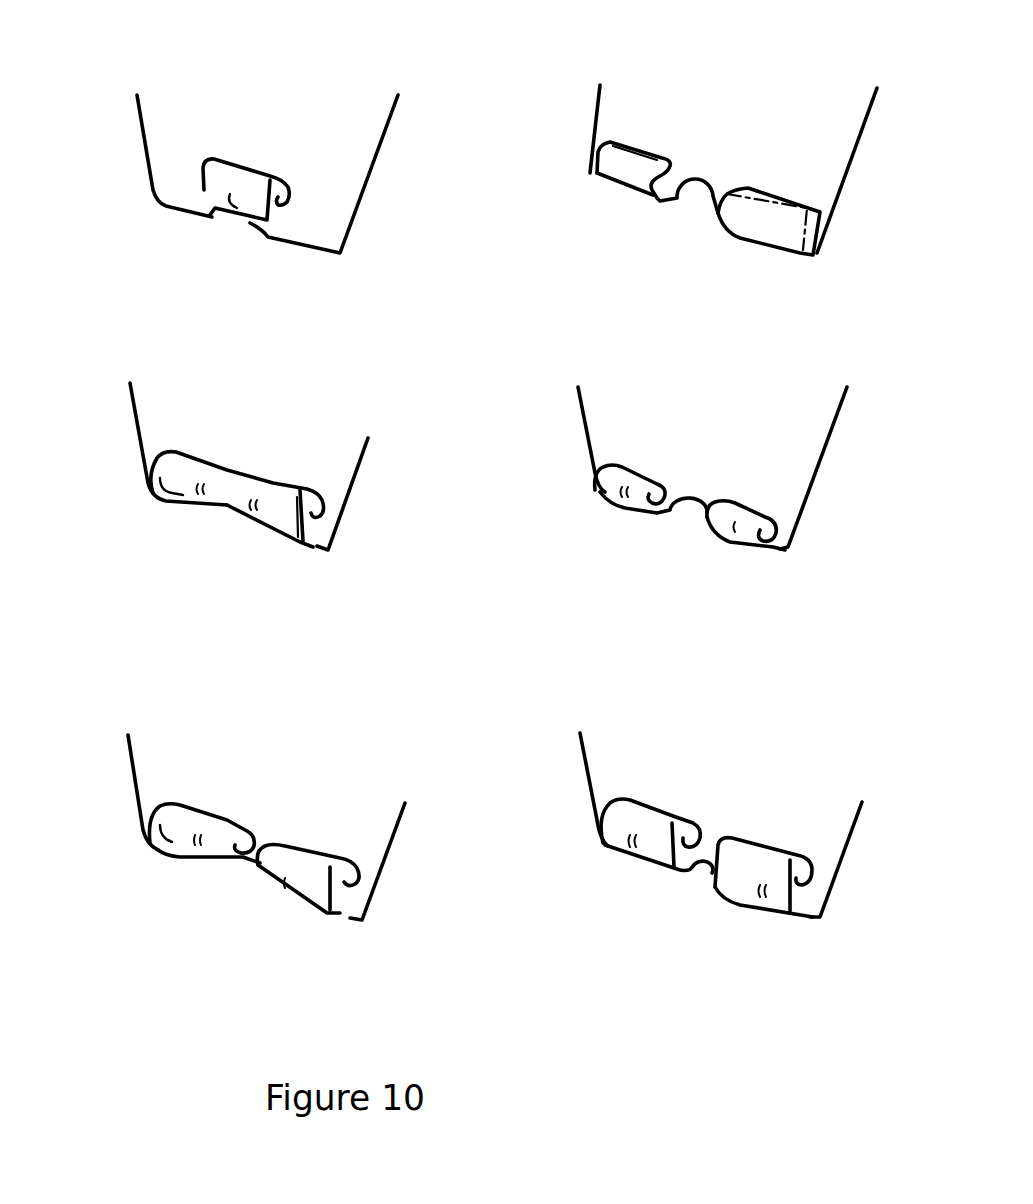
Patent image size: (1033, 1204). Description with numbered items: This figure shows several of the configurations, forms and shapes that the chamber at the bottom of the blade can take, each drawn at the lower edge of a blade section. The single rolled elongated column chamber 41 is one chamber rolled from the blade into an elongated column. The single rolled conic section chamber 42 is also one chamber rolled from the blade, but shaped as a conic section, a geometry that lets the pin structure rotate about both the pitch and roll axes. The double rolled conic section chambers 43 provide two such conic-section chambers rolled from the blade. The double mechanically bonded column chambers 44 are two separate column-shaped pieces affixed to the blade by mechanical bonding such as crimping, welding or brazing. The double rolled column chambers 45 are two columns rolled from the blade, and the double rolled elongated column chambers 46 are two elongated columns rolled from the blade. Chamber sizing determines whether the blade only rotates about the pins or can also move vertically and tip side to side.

The single rolled elongated column chamber 41 is at (233, 182).
The single rolled conic section chamber 42 is at (247, 492).
The double rolled conic section chambers 43 is at (300, 865).
The double mechanically bonded column chambers 44 is at (745, 203).
The double rolled column chambers 45 is at (720, 527).
The double rolled elongated column chambers 46 is at (758, 863).